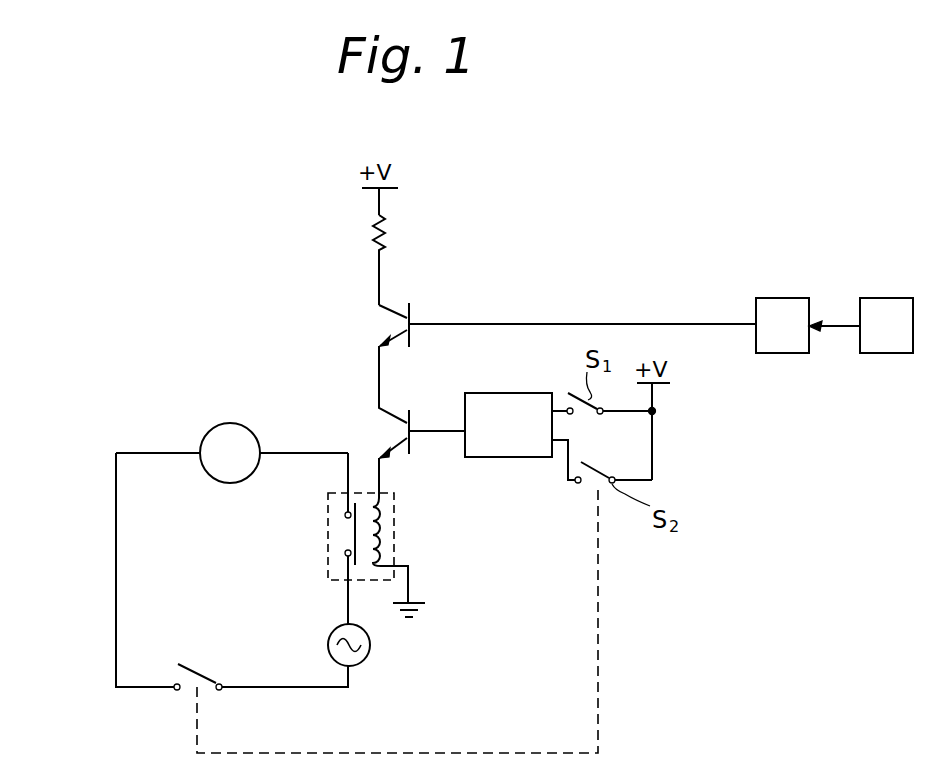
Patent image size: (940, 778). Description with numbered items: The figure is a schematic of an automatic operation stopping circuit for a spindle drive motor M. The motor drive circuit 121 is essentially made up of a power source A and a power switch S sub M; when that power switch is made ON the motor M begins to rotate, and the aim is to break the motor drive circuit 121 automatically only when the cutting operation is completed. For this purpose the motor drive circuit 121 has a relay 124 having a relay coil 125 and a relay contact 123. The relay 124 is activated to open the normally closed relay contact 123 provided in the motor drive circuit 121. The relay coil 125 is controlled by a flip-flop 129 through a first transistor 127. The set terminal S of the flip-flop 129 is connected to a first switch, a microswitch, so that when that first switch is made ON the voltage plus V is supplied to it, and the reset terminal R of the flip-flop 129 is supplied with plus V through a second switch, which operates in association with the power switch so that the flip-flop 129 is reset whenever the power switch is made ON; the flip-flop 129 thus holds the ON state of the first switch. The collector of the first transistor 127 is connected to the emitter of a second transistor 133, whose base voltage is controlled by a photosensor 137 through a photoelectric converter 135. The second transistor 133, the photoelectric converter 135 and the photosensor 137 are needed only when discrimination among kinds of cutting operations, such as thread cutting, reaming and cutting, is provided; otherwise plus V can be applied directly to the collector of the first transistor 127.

The motor drive circuit 121 is at (110, 600).
The relay contact 123 is at (352, 536).
The relay 124 is at (394, 557).
The relay coil 125 is at (385, 538).
The first transistor 127 is at (405, 450).
The flip-flop 129 is at (522, 457).
The second transistor 133 is at (412, 316).
The photoelectric converter 135 is at (778, 298).
The photosensor 137 is at (886, 298).